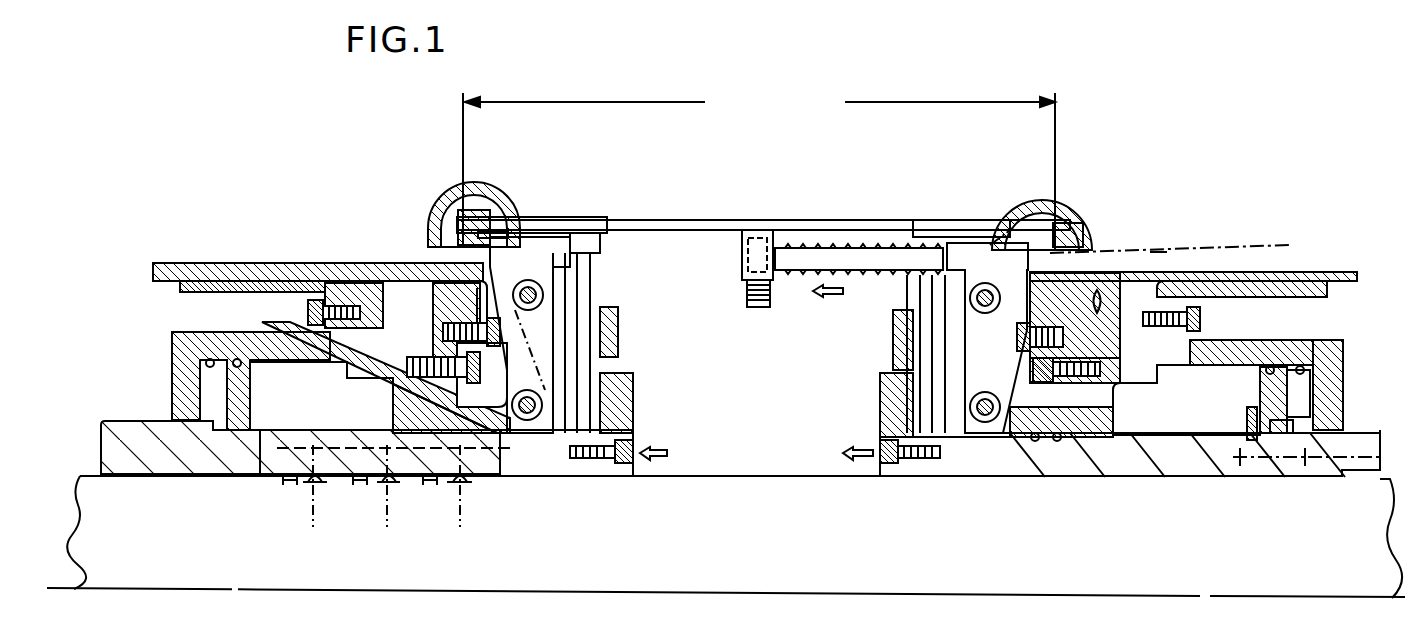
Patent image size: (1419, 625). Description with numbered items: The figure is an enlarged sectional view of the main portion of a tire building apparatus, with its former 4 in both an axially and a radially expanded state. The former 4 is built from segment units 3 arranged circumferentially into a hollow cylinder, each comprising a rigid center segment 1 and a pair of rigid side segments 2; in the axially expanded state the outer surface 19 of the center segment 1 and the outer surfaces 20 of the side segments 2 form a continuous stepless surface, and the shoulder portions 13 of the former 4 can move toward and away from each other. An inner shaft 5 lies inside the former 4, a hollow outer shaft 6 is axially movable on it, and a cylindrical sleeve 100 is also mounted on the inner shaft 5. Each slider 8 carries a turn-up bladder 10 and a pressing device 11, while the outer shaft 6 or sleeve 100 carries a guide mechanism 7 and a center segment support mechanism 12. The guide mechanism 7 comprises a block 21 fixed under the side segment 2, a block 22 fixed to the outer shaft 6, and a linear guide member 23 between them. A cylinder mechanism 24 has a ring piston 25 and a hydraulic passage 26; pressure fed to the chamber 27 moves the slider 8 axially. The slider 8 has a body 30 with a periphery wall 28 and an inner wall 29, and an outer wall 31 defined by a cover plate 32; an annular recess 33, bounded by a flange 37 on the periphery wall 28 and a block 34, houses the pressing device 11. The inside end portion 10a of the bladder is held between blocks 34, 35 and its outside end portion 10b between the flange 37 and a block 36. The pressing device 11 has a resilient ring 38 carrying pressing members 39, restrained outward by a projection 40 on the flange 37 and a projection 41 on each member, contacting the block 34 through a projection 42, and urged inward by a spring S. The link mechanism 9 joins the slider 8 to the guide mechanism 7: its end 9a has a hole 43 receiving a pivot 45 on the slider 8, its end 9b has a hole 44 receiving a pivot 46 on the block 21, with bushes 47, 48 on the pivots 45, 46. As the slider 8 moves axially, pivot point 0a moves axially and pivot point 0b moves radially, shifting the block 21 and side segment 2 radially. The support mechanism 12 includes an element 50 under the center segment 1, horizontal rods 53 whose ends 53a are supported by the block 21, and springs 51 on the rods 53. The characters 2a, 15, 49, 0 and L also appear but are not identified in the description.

The center segment 1 is at (700, 220).
The side segments 2 is at (575, 222).
The support member end 2a is at (1030, 225).
The segment units 3 is at (856, 197).
The former 4 is at (895, 194).
The inner shaft 5 is at (100, 488).
The outer shaft 6 is at (1228, 478).
The guide mechanism 7 is at (600, 270).
The slider 8 is at (375, 264).
The link mechanism 9 is at (512, 403).
The one end of link mechanism 9a is at (565, 430).
The other end of link mechanism 9b is at (883, 290).
The turn-up bladder 10 is at (280, 264).
The inside end portion of turn-up bladder 10a is at (387, 480).
The outside end portion of turn-up bladder 10b is at (348, 264).
The pressing device 11 is at (321, 396).
The center segment support mechanism 12 is at (745, 295).
The shoulder portions 13 is at (517, 212).
The roller 15 is at (440, 205).
The outer surface of center segment 19 is at (790, 220).
The outer surfaces of side segments 20 is at (548, 218).
The block 21 is at (556, 287).
The block 22 is at (633, 405).
The linear guide member 23 is at (560, 318).
The cylinder mechanism 24 is at (1352, 270).
The ring piston 25 is at (1350, 412).
The hydraulic passage 26 is at (1330, 478).
The chamber 27 is at (1140, 440).
The periphery wall 28 is at (1282, 340).
The inner wall 29 is at (1080, 385).
The body 30 is at (1295, 345).
The outer wall 31 is at (1345, 350).
The cover plate 32 is at (1330, 385).
The annular recess 33 is at (1186, 400).
The block 34 is at (995, 375).
The block 35 is at (912, 465).
The block 36 is at (1227, 268).
The flange 37 is at (1180, 368).
The resilient ring 38 is at (1062, 543).
The pressing members 39 is at (1030, 523).
The projection 40 is at (1130, 253).
The projection 41 is at (1137, 258).
The projection 42 is at (1000, 330).
The hole 43 is at (513, 423).
The hole 44 is at (759, 335).
The pivot 45 is at (540, 420).
The pivot 46 is at (596, 240).
The bush 47 is at (633, 450).
The bush 48 is at (600, 303).
The bolt 49 is at (758, 307).
The element 50 is at (742, 255).
The springs 51 is at (826, 246).
The horizontal rods 53 is at (800, 270).
The one end of horizontal rod 53a is at (1013, 228).
The ring 0 is at (990, 312).
The pivot point 0a is at (590, 350).
The pivot point 0b is at (565, 335).
The sleeve 100 is at (135, 440).
The length L is at (759, 167).
The spring S is at (306, 313).